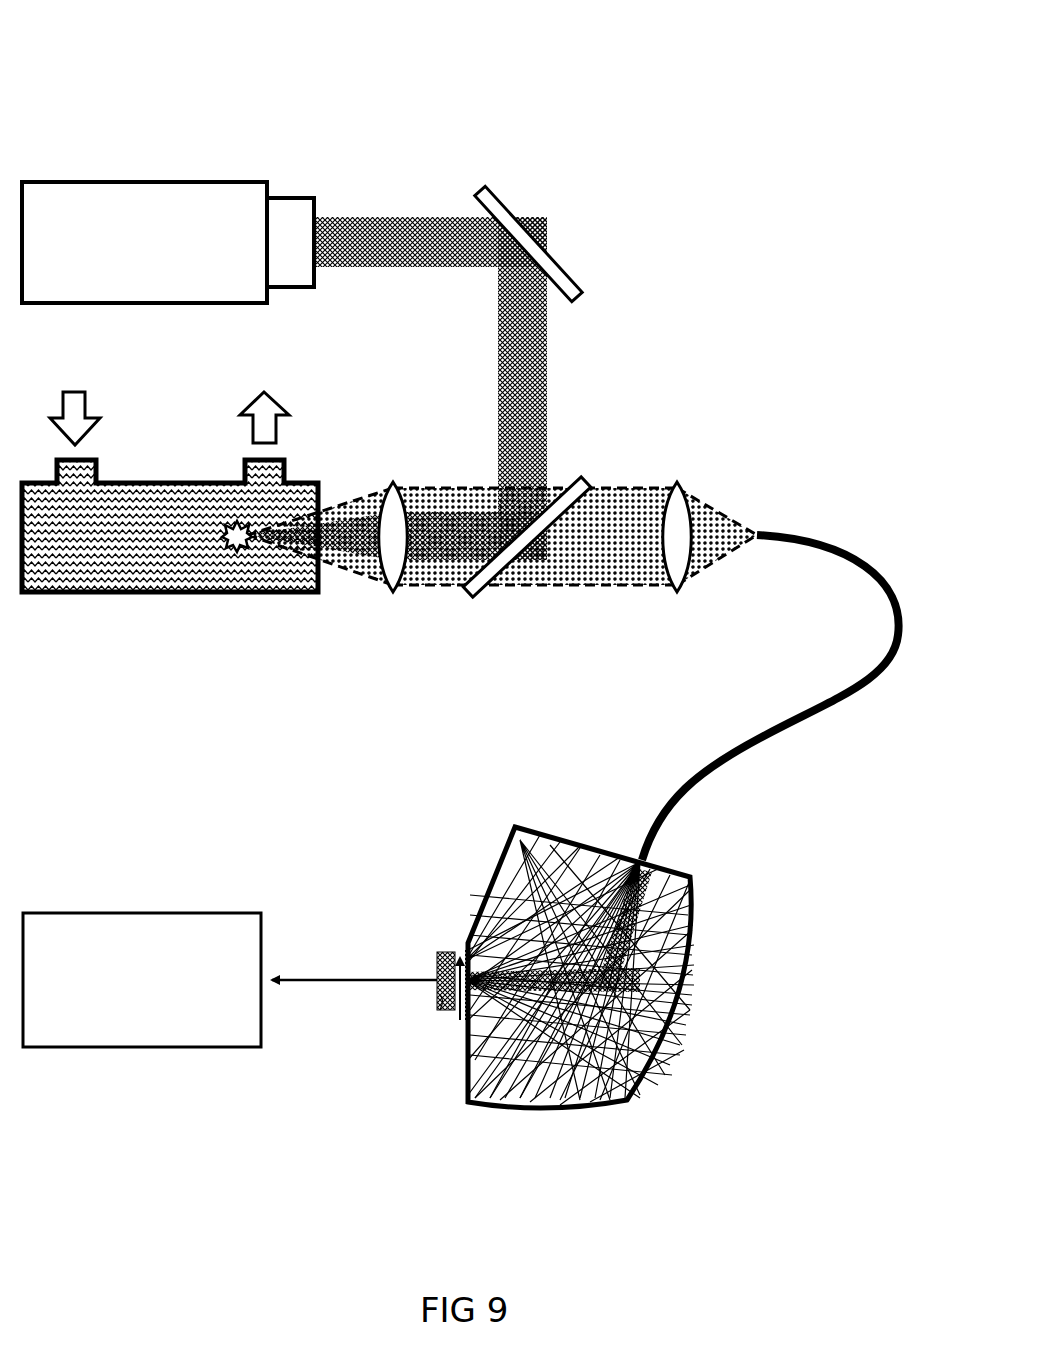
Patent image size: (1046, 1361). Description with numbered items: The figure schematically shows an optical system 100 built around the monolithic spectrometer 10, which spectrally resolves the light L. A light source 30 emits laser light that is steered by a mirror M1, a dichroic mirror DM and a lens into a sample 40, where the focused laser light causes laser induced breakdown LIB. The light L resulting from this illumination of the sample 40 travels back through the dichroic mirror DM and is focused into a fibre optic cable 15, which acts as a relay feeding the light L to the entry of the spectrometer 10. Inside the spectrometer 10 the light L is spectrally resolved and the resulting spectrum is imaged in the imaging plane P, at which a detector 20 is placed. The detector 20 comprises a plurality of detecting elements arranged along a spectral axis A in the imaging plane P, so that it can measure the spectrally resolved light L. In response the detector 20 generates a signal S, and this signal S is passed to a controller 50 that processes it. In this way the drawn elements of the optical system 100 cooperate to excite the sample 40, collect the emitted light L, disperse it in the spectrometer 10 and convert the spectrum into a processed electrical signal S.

The optical system 100 is at (116, 68).
The light source 30 is at (177, 257).
The mirror M1 is at (528, 243).
The sample 40 is at (184, 546).
The laser induced breakdown LIB is at (238, 562).
The dichroic mirror DM is at (542, 523).
The light L is at (621, 553).
The fibre optic cable 15 is at (676, 778).
The spectrometer 10 is at (493, 860).
The detector 20 is at (426, 955).
The imaging plane P is at (458, 936).
The spectral axis A is at (444, 1008).
The signal S is at (354, 965).
The controller 50 is at (156, 997).